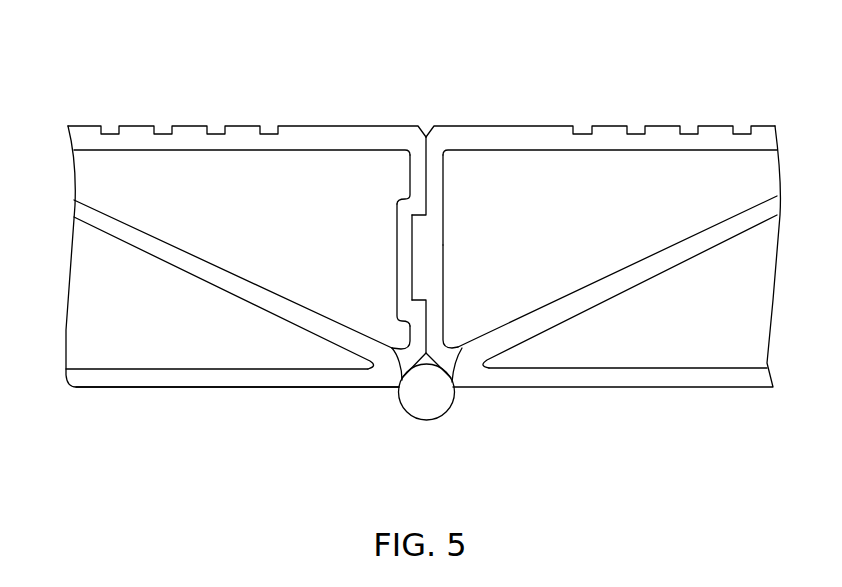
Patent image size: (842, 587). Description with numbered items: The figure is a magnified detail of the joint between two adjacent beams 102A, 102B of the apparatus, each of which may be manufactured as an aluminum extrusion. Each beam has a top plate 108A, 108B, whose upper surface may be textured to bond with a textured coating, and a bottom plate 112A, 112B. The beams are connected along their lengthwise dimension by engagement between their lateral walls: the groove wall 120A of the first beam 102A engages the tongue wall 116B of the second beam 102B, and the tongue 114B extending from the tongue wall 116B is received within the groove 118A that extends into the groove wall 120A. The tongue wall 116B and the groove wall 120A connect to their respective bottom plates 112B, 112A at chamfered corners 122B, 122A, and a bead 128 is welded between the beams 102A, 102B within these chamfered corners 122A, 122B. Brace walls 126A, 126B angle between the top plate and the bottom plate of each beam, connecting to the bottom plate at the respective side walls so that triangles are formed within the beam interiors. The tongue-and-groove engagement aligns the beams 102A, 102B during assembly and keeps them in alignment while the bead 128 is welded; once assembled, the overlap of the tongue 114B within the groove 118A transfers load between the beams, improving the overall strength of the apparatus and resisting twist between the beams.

The first beam 102A is at (265, 106).
The second beam 102B is at (666, 106).
The top plate 108A is at (138, 143).
The top plate 108B is at (558, 142).
The bottom plate 112A is at (230, 378).
The bottom plate 112B is at (619, 378).
The tongue 114B is at (431, 253).
The tongue wall 116B is at (444, 170).
The groove 118A is at (398, 238).
The groove wall 120A is at (412, 175).
The chamfered corner 122A is at (392, 348).
The chamfered corner 122B is at (462, 348).
The brace wall 126A is at (200, 268).
The brace wall 126B is at (663, 262).
The bead 128 is at (423, 407).